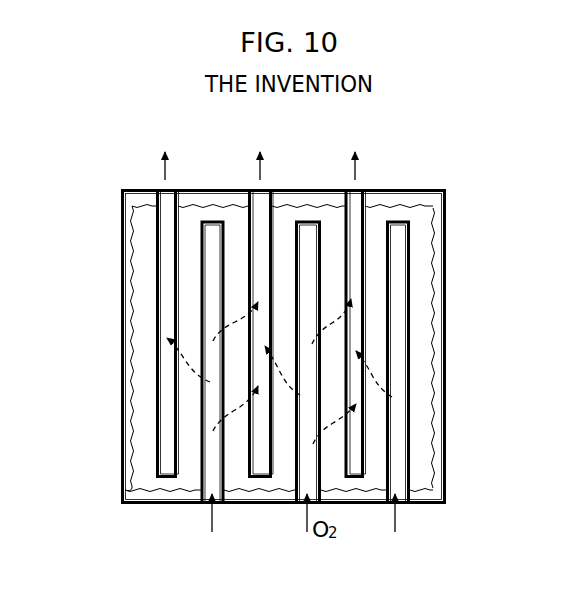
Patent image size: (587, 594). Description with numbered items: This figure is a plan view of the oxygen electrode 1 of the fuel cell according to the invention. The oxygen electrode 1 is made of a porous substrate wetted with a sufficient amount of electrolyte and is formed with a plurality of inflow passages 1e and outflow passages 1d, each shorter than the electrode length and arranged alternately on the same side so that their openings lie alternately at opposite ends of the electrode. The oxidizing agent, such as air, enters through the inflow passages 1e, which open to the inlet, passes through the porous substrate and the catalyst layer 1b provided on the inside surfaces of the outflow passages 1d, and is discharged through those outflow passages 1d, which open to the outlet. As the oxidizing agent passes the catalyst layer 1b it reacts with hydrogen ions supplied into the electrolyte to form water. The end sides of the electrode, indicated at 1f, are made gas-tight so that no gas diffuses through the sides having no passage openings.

The oxygen electrode 1 is at (440, 362).
The catalyst layer 1b is at (177, 190).
The outflow passage 1d is at (160, 303).
The inflow passage 1e is at (400, 290).
The porous electrode layer 1f is at (394, 190).